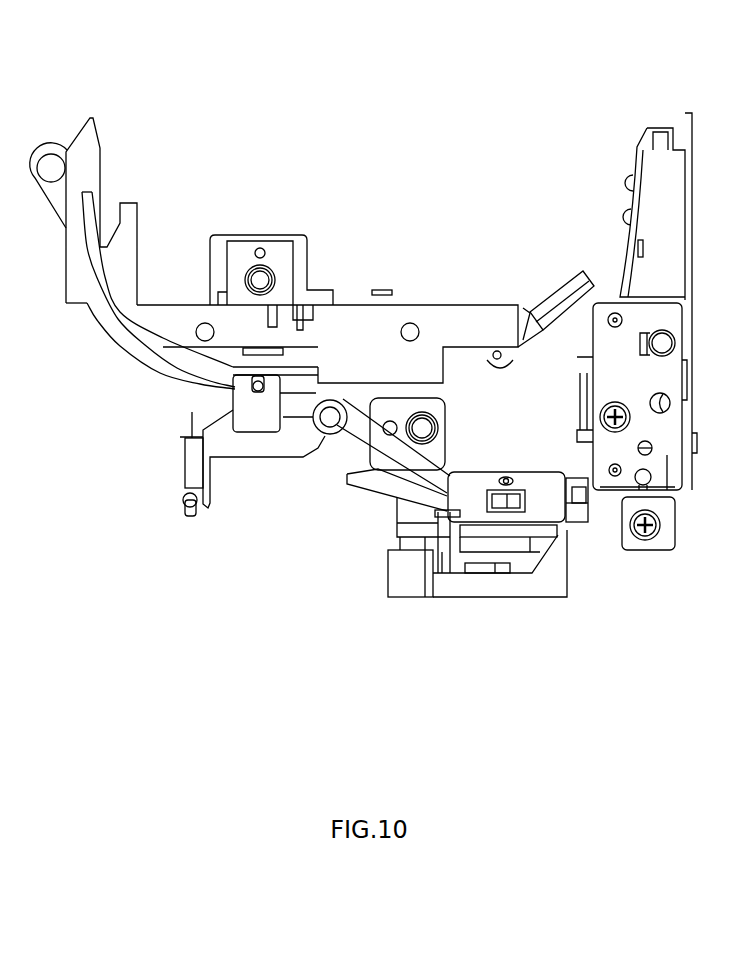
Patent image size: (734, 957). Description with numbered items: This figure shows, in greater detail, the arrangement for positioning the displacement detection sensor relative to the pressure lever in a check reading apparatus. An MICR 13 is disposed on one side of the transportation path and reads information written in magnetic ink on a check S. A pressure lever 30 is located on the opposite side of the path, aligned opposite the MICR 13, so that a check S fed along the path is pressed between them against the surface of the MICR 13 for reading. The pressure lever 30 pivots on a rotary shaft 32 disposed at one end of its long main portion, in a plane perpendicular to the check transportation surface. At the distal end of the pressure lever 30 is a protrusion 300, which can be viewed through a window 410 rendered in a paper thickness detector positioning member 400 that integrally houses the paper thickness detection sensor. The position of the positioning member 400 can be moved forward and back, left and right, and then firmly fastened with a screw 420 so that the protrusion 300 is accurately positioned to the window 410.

The MICR 13 is at (313, 257).
The pressure lever 30 is at (257, 457).
The rotary shaft 32 is at (330, 420).
The protrusion 300 is at (492, 500).
The paper thickness detector positioning member 400 is at (530, 598).
The window 410 is at (530, 482).
The screw 420 is at (445, 412).
The check S is at (668, 100).